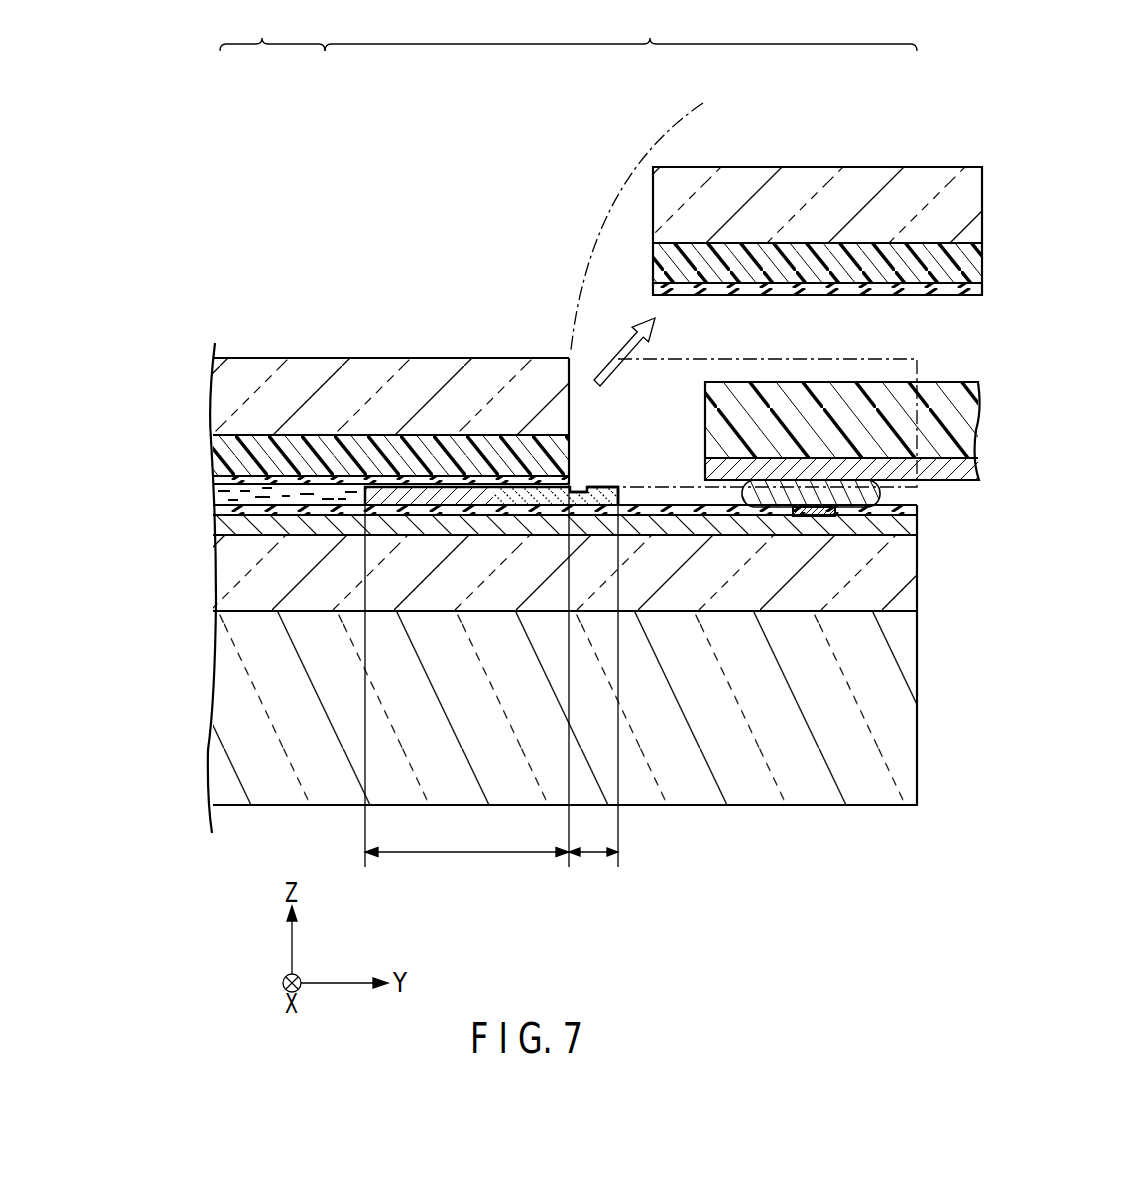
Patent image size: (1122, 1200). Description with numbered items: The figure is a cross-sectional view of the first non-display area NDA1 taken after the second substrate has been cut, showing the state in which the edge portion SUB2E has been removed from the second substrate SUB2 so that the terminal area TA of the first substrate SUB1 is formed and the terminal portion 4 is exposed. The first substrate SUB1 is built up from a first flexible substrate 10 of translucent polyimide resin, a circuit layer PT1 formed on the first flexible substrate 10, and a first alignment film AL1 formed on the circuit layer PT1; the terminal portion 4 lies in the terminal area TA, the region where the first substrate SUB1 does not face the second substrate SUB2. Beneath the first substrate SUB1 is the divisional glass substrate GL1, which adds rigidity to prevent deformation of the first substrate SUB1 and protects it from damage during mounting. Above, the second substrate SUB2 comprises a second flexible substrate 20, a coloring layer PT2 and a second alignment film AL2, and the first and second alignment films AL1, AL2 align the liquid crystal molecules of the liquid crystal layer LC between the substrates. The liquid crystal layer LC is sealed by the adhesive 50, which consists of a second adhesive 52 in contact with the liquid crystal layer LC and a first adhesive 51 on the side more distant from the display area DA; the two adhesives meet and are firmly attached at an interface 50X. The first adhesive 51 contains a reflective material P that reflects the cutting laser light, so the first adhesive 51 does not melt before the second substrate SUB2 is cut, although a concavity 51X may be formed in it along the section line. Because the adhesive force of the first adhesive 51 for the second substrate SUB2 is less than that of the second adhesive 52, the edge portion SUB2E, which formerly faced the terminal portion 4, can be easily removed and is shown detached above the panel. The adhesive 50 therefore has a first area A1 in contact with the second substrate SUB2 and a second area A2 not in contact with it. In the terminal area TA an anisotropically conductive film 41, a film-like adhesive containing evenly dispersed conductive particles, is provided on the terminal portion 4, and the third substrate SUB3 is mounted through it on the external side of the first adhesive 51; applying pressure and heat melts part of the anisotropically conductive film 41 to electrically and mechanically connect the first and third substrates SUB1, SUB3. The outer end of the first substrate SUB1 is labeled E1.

The display area DA is at (272, 29).
The first non-display area NDA1 is at (621, 29).
The edge portion of the second substrate SUB2E is at (713, 167).
The third substrate SUB3 is at (878, 396).
The second substrate SUB2 is at (319, 425).
The first substrate SUB1 is at (525, 523).
The second flexible substrate 20 is at (230, 404).
The coloring layer PT2 is at (235, 457).
The second alignment film AL2 is at (358, 478).
The first alignment film AL1 is at (218, 511).
The circuit layer PT1 is at (228, 530).
The first flexible substrate 10 is at (235, 581).
The glass substrate GL1 is at (265, 730).
The liquid crystal layer LC is at (314, 500).
The adhesive 50 is at (491, 484).
The second adhesive 52 is at (412, 495).
The first adhesive 51 is at (552, 492).
The concavity 51X is at (583, 490).
The interface 50X is at (480, 505).
The terminal area TA is at (650, 507).
The reflective material P is at (592, 500).
The anisotropically conductive film 41 is at (879, 493).
The terminal portion 4 is at (812, 530).
The end edge of first substrate E1 is at (917, 597).
The first area A1 is at (467, 836).
The second area A2 is at (593, 836).